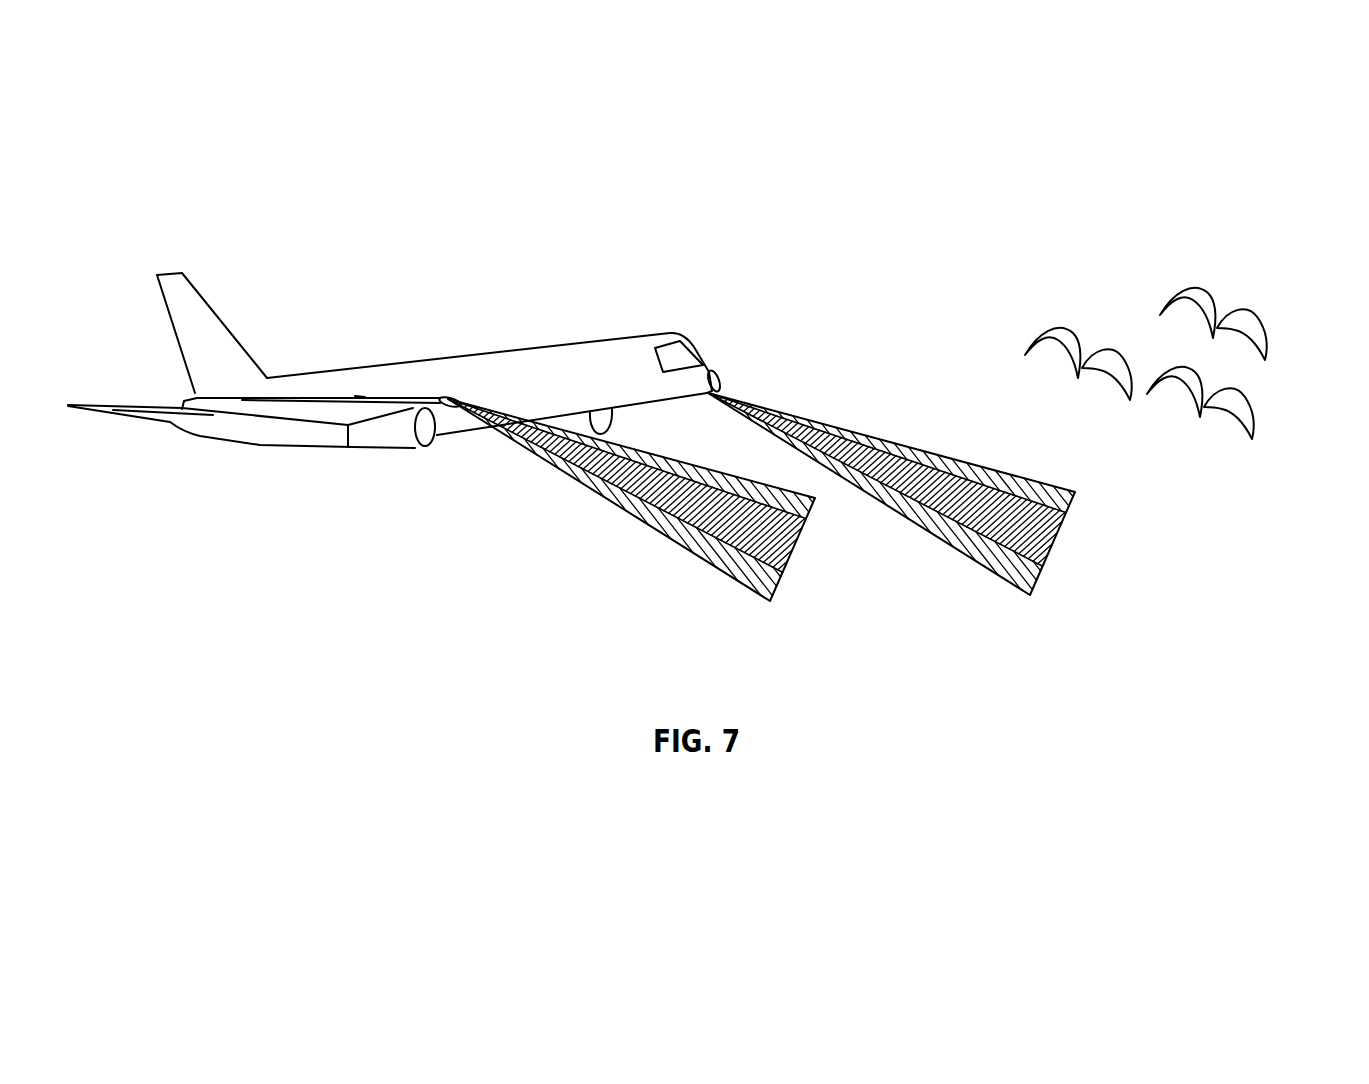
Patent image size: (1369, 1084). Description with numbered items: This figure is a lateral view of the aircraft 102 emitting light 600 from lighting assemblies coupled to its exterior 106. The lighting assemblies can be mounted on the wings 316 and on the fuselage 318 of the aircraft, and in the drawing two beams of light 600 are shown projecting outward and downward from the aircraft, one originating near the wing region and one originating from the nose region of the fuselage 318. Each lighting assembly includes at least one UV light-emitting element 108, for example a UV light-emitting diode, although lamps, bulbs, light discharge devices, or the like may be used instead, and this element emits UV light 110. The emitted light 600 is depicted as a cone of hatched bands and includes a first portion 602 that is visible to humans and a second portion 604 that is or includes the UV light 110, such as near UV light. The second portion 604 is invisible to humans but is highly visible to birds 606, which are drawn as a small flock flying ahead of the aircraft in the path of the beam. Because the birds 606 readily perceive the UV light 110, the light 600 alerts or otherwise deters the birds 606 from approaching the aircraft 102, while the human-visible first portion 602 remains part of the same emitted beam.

The aircraft 102 is at (655, 323).
The exterior 106 is at (538, 370).
The UV light-emitting element 108 is at (450, 396).
The UV light 110 is at (1047, 547).
The wings 316 is at (360, 394).
The fuselage 318 is at (712, 392).
The light 600 is at (950, 446).
The first portion 602 is at (1015, 580).
The second portion 604 is at (1037, 517).
The birds 606 is at (1242, 307).